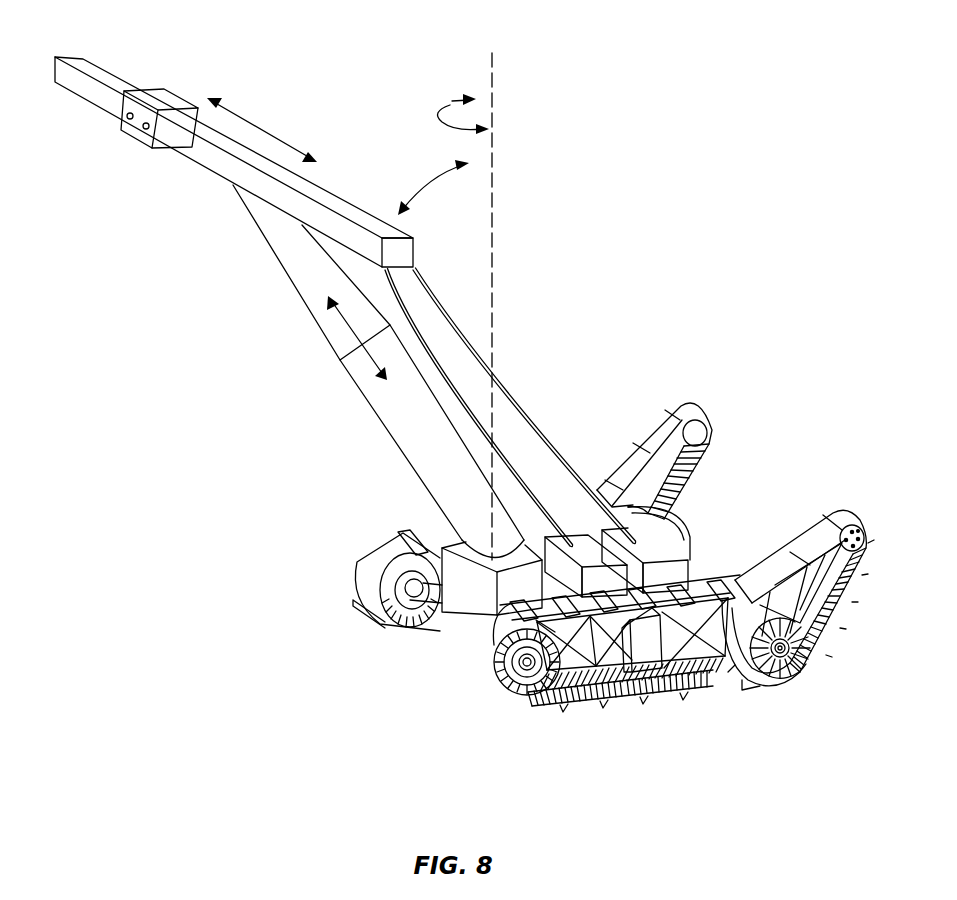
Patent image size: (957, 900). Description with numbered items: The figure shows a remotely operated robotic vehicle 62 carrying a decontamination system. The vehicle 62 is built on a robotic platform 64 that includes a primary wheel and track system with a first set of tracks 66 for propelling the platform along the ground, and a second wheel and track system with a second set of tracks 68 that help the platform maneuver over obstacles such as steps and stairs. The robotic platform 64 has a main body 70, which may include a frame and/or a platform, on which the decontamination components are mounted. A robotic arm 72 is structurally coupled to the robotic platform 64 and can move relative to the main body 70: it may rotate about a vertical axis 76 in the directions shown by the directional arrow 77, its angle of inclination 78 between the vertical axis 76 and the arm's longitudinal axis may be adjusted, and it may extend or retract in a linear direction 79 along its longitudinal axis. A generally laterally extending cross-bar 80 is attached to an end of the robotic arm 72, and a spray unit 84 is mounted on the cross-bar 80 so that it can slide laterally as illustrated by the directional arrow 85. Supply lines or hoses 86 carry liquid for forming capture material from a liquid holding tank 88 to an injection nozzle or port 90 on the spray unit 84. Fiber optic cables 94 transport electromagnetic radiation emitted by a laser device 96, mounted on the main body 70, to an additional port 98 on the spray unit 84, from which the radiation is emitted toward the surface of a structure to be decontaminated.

The robotic vehicle 62 is at (658, 234).
The robotic platform 64 is at (508, 727).
The first set of tracks 66 is at (392, 548).
The second set of tracks 68 is at (660, 433).
The main body 70 is at (470, 622).
The robotic arm 72 is at (344, 400).
The vertical axis 76 is at (493, 83).
The directional arrow 77 is at (452, 101).
The angle of inclination 78 is at (425, 187).
The linear direction 79 is at (346, 330).
The cross-bar 80 is at (104, 77).
The spray unit 84 is at (162, 100).
The directional arrow 85 is at (270, 128).
The supply lines or hoses 86 is at (424, 342).
The liquid holding tank 88 is at (591, 591).
The injection nozzle or port 90 is at (129, 121).
The fiber optic cables 94 is at (541, 427).
The laser device 96 is at (654, 582).
The additional port 98 is at (140, 134).